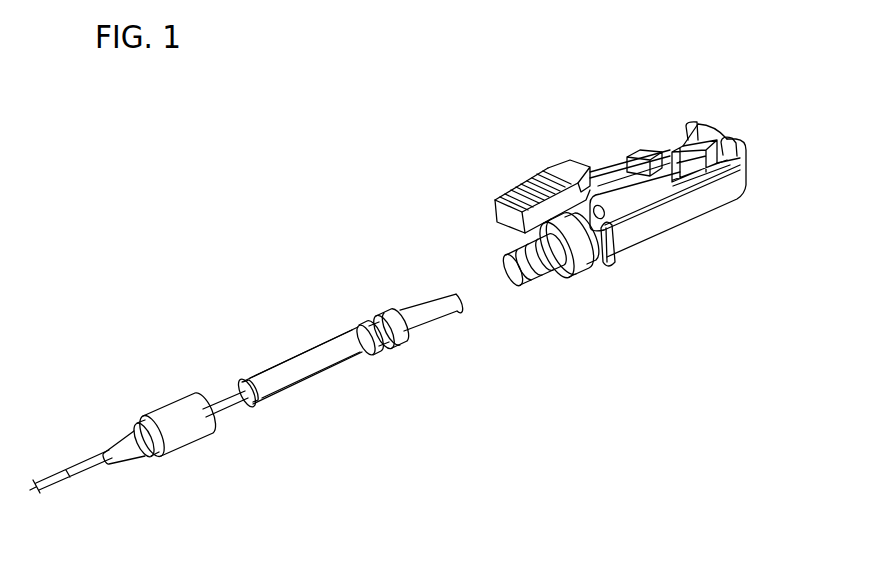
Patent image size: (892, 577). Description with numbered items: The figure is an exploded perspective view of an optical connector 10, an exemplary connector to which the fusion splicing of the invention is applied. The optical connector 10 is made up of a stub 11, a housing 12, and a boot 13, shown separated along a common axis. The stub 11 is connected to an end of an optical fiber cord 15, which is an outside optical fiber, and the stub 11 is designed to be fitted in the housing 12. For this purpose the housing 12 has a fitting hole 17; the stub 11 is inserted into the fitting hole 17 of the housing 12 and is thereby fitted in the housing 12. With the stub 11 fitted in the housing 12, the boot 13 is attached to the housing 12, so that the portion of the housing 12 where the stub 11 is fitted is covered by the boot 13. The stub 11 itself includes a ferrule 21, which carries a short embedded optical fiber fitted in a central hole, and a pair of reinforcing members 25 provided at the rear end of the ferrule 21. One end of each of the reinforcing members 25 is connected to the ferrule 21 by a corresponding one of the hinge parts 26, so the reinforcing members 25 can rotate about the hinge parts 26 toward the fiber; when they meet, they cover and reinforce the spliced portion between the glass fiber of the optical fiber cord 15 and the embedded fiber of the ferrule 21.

The optical connector 10 is at (466, 150).
The stub 11 is at (378, 294).
The housing 12 is at (645, 240).
The boot 13 is at (183, 447).
The optical fiber cord 15 is at (219, 401).
The fitting hole 17 is at (515, 287).
The ferrule 21 is at (433, 323).
The reinforcing members 25 is at (271, 368).
The hinge parts 26 is at (359, 323).